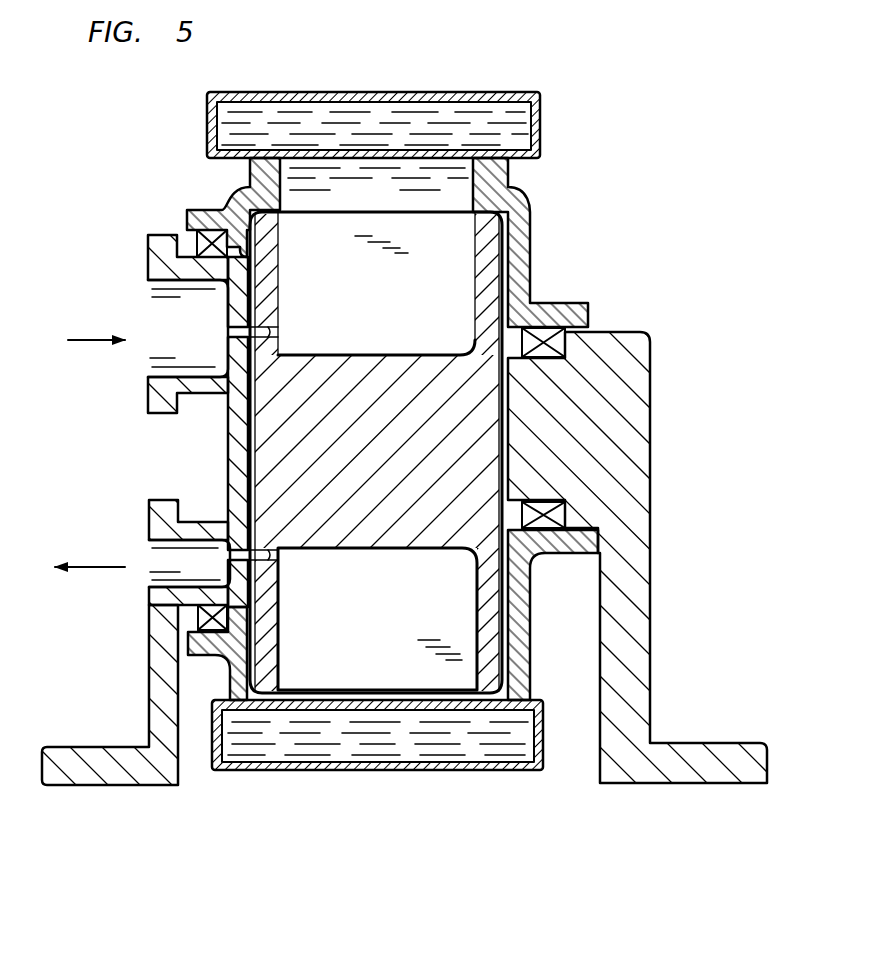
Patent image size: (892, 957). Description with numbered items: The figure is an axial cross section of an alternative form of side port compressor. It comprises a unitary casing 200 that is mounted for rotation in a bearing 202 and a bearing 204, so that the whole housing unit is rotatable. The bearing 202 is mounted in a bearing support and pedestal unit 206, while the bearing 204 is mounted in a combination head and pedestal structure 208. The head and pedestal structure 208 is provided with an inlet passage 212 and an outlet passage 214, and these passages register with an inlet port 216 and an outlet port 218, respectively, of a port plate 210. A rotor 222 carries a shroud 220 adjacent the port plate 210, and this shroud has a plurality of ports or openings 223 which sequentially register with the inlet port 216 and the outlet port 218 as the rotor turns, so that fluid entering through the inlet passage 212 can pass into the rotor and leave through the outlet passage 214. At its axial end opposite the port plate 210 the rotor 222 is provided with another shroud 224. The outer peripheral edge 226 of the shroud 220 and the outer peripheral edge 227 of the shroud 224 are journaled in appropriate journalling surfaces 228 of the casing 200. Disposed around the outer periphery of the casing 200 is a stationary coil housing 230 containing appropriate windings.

The unitary casing 200 is at (528, 207).
The bearing 202 is at (560, 352).
The bearing 204 is at (195, 241).
The bearing support and pedestal unit 206 is at (637, 518).
The combination head and pedestal structure 208 is at (158, 630).
The port plate 210 is at (238, 433).
The inlet passage 212 is at (155, 291).
The outlet passage 214 is at (152, 546).
The inlet port 216 is at (232, 337).
The outlet port 218 is at (232, 572).
The shroud 220 is at (272, 593).
The rotor 222 is at (440, 582).
The ports or openings 223 is at (275, 338).
The shroud 224 is at (488, 627).
The outer peripheral edge 226 is at (263, 222).
The outer peripheral edge 227 is at (480, 218).
The journalling surfaces 228 is at (470, 200).
The stationary coil housing 230 is at (484, 95).